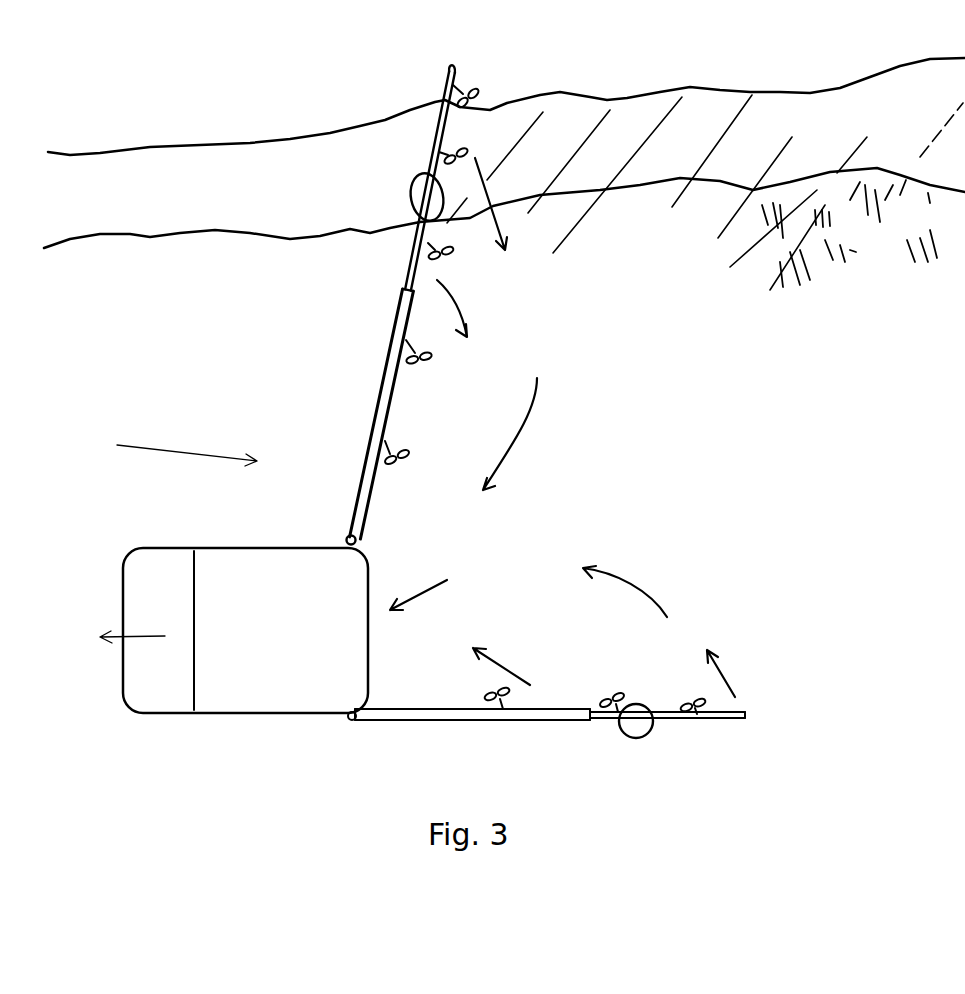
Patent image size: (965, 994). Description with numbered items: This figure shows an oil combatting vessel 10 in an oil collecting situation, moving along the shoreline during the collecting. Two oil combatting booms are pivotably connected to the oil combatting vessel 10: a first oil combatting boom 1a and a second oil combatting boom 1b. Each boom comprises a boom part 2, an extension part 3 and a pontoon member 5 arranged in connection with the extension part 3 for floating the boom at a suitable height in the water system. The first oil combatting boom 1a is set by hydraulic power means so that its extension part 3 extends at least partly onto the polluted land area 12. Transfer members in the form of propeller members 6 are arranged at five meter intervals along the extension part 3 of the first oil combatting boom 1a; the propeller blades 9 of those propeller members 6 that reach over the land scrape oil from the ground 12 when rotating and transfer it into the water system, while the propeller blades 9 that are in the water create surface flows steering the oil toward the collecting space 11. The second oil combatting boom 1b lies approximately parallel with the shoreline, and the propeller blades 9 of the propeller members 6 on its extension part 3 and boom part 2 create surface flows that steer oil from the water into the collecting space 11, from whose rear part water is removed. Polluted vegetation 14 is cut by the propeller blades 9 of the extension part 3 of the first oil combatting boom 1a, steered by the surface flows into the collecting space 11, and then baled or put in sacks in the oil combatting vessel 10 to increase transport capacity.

The first oil combatting boom 1a is at (368, 338).
The second oil combatting boom 1b is at (403, 738).
The boom part 2 is at (375, 406).
The extension part 3 is at (432, 158).
The pontoon member 5 is at (412, 203).
The propeller member 6 is at (468, 76).
The propeller blade 9 is at (422, 360).
The oil combatting vessel 10 is at (235, 524).
The collecting space 11 is at (248, 665).
The polluted land area 12 is at (623, 123).
The polluted vegetation 14 is at (772, 280).